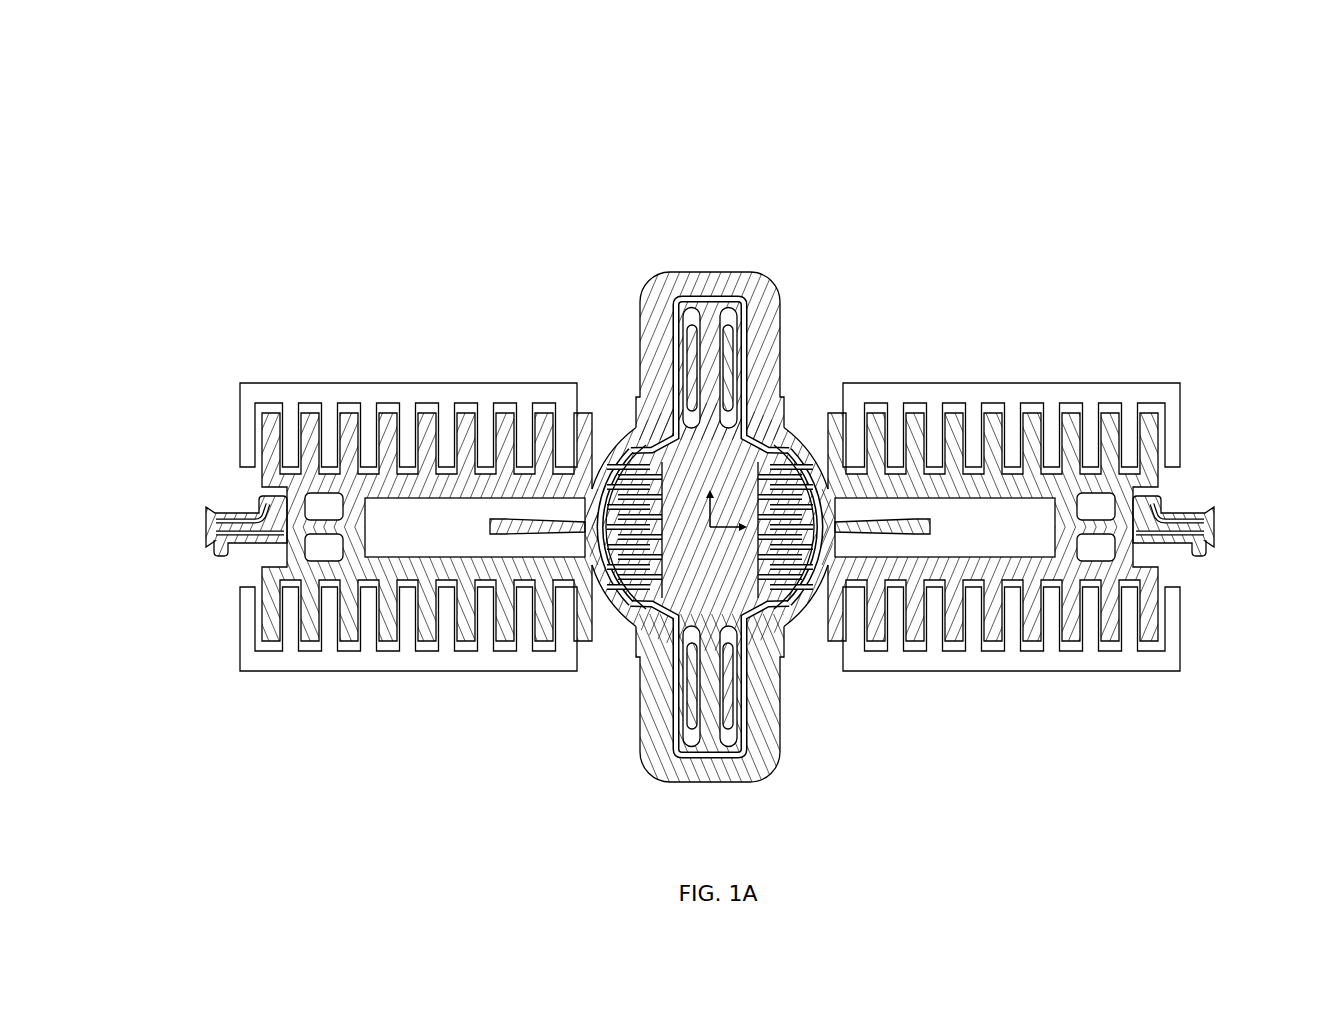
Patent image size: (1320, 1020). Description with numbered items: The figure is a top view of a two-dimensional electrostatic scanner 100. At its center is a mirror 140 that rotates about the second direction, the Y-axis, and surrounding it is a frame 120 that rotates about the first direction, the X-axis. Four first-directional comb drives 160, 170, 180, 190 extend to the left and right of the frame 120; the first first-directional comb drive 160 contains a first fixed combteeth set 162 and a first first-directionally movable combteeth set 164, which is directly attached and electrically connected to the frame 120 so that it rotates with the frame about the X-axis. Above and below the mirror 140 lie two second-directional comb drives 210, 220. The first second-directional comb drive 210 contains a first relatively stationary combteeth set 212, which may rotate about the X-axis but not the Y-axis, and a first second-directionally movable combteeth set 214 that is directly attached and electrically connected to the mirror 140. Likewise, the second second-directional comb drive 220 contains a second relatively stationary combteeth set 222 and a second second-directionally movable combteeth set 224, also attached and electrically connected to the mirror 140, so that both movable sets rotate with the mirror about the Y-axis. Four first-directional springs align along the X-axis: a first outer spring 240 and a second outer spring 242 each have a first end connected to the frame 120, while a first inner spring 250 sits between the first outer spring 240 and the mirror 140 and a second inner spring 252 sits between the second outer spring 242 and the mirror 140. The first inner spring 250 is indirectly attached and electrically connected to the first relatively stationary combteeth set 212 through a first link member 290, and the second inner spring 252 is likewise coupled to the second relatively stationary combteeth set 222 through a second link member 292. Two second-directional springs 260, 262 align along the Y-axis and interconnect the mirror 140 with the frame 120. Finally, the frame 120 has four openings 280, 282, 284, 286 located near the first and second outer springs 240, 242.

The two-dimensional electrostatic scanner 100 is at (700, 468).
The frame 120 is at (767, 318).
The mirror 140 is at (728, 478).
The first first-directional comb drive 160 is at (1053, 441).
The first fixed combteeth set 162 is at (1200, 411).
The first first-directionally movable combteeth set 164 is at (1180, 479).
The first-directional comb drive 170 is at (204, 431).
The first-directional comb drive 180 is at (204, 595).
The first-directional comb drive 190 is at (1224, 601).
The first second-directional comb drive 210 is at (780, 655).
The first relatively stationary combteeth set 212 is at (762, 615).
The first second-directionally movable combteeth set 214 is at (787, 462).
The second second-directional comb drive 220 is at (640, 655).
The second relatively stationary combteeth set 222 is at (658, 615).
The second second-directionally movable combteeth set 224 is at (633, 463).
The first outer spring 240 is at (1207, 545).
The second outer spring 242 is at (214, 543).
The first inner spring 250 is at (930, 521).
The second inner spring 252 is at (490, 521).
The second-directional spring 260 is at (710, 330).
The second-directional spring 262 is at (706, 738).
The opening 280 is at (1088, 490).
The opening 282 is at (332, 490).
The opening 284 is at (318, 535).
The opening 286 is at (1102, 535).
The first link member 290 is at (817, 576).
The second link member 292 is at (603, 576).